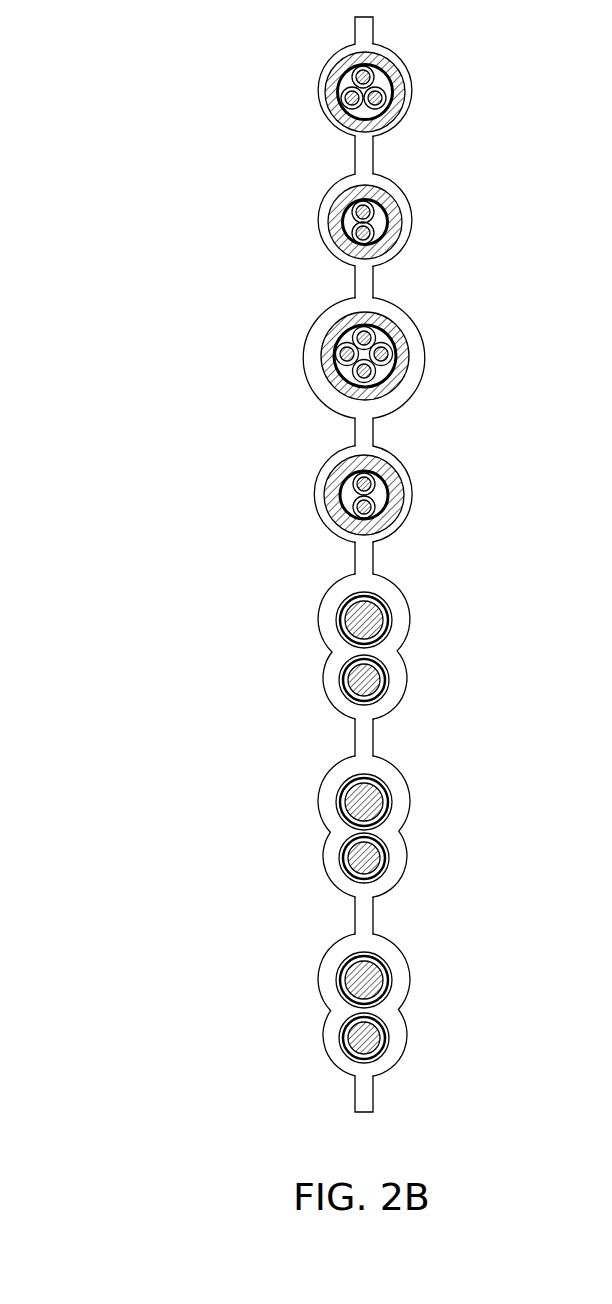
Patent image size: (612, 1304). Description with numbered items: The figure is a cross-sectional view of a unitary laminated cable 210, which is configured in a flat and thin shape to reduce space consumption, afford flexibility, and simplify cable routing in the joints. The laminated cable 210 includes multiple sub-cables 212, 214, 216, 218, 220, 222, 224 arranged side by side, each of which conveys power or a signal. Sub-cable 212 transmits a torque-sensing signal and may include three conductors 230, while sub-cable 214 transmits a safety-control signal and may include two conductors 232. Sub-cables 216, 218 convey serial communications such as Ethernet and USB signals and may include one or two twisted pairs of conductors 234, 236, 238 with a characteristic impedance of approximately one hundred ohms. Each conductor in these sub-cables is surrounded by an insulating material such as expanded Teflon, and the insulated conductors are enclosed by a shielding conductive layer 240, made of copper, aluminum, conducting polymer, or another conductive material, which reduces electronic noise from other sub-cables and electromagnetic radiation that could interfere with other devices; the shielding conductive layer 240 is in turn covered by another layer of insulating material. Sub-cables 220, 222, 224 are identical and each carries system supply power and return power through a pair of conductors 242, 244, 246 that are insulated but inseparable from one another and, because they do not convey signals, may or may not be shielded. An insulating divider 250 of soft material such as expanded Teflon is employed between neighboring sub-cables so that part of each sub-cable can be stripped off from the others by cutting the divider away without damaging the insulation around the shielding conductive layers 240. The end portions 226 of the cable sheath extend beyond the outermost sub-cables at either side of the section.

The laminated cable 210 is at (140, 55).
The sub-cable 212 is at (414, 96).
The sub-cable 214 is at (414, 218).
The sub-cable 216 is at (427, 355).
The sub-cable 218 is at (414, 489).
The sub-cable 220 is at (410, 622).
The sub-cable 222 is at (412, 800).
The sub-cable 224 is at (412, 975).
The end tube portion 226 is at (376, 32).
The conductors 230 is at (366, 72).
The conductors 232 is at (352, 231).
The twisted pair of conductors 234 is at (353, 373).
The twisted pair of conductors 236 is at (357, 329).
The twisted pair of conductors 238 is at (353, 506).
The shielding conductive layer 240 is at (327, 80).
The pair of conductors 242 is at (345, 675).
The pair of conductors 244 is at (345, 853).
The pair of conductors 246 is at (345, 1033).
The insulating divider 250 is at (375, 149).